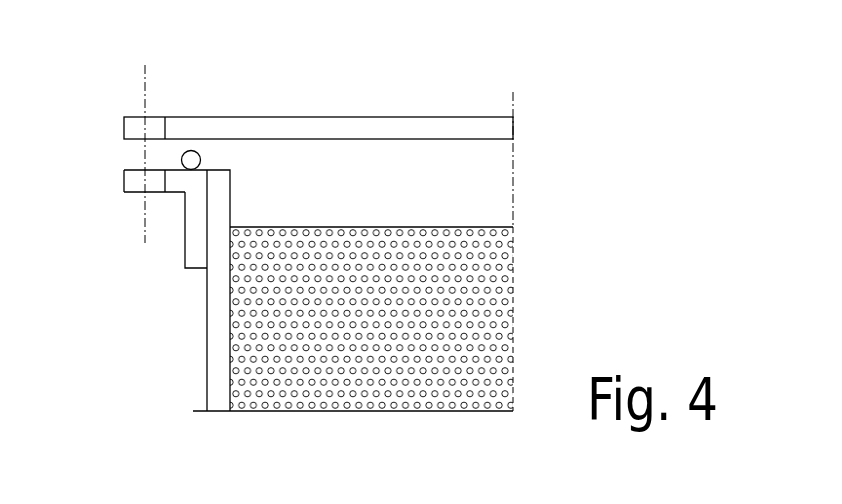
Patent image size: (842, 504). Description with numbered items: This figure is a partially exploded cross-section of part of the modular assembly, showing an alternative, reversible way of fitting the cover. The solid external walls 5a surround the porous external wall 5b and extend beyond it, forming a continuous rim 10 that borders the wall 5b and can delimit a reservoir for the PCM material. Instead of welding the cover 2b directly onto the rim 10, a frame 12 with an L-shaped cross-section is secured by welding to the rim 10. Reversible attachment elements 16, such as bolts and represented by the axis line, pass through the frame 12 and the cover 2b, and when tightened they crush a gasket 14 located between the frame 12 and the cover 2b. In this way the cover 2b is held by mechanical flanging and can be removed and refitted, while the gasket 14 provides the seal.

The cover 2b is at (403, 116).
The reversible attachment elements 16 is at (142, 102).
The gasket 14 is at (191, 151).
The rim 10 is at (222, 198).
The frame 12 is at (190, 251).
The solid external walls 5a is at (218, 345).
The porous external wall 5b is at (452, 227).